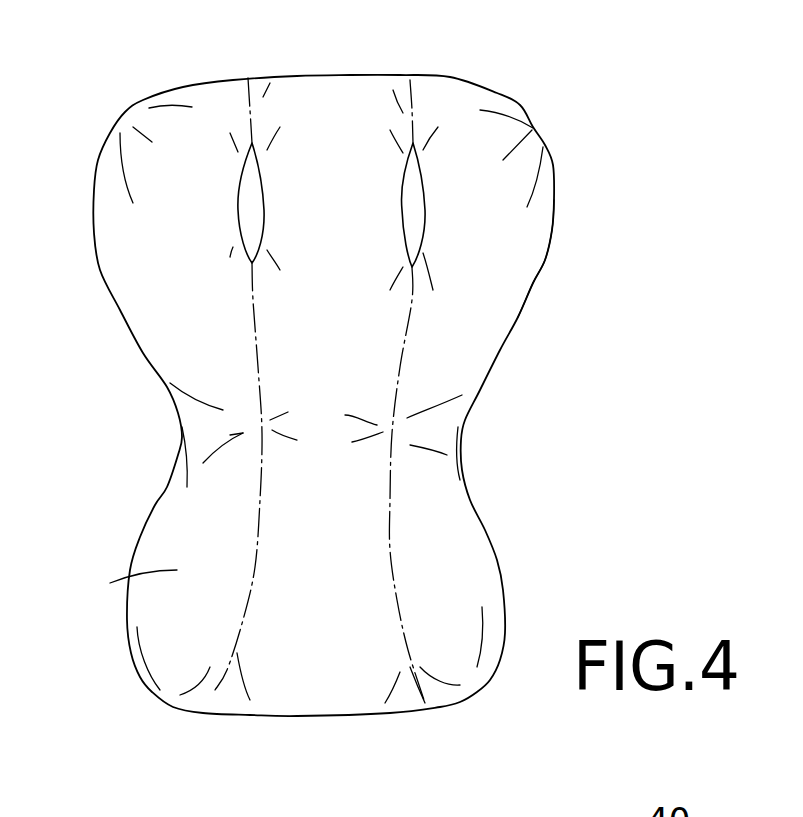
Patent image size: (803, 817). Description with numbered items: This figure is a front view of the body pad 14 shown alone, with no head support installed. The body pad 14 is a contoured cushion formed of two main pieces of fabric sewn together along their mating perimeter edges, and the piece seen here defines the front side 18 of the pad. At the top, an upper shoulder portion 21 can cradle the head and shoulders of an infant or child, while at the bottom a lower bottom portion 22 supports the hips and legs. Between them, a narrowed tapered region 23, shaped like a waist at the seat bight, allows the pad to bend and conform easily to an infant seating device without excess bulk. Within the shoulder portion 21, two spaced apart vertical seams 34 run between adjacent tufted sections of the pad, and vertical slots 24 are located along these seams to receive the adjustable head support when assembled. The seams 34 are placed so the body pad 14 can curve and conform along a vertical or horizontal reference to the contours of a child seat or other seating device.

The body pad 14 is at (180, 74).
The front side 18 is at (515, 278).
The upper shoulder portion 21 is at (130, 252).
The lower bottom portion 22 is at (130, 586).
The narrowed tapered region 23 is at (180, 430).
The slots 24 is at (250, 205).
The vertical seams 34 is at (411, 335).